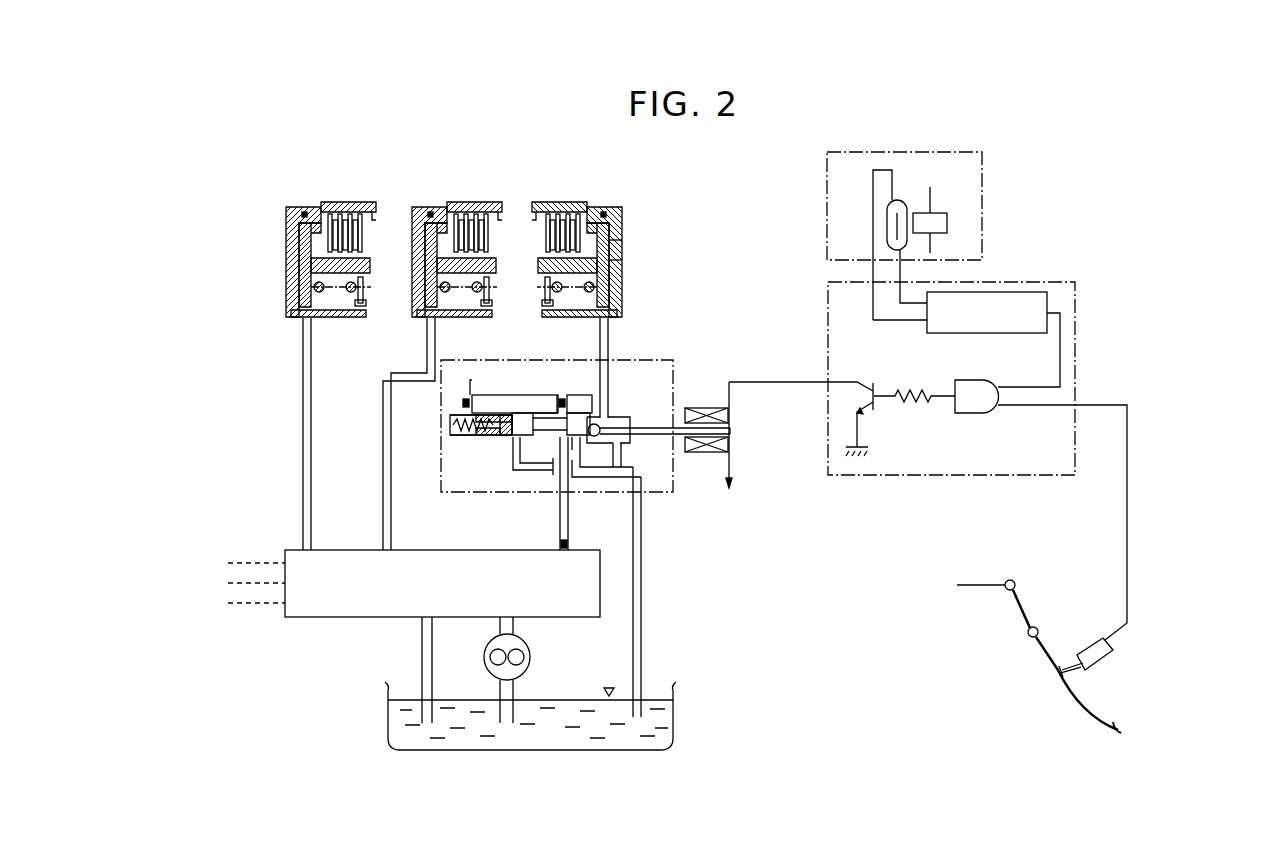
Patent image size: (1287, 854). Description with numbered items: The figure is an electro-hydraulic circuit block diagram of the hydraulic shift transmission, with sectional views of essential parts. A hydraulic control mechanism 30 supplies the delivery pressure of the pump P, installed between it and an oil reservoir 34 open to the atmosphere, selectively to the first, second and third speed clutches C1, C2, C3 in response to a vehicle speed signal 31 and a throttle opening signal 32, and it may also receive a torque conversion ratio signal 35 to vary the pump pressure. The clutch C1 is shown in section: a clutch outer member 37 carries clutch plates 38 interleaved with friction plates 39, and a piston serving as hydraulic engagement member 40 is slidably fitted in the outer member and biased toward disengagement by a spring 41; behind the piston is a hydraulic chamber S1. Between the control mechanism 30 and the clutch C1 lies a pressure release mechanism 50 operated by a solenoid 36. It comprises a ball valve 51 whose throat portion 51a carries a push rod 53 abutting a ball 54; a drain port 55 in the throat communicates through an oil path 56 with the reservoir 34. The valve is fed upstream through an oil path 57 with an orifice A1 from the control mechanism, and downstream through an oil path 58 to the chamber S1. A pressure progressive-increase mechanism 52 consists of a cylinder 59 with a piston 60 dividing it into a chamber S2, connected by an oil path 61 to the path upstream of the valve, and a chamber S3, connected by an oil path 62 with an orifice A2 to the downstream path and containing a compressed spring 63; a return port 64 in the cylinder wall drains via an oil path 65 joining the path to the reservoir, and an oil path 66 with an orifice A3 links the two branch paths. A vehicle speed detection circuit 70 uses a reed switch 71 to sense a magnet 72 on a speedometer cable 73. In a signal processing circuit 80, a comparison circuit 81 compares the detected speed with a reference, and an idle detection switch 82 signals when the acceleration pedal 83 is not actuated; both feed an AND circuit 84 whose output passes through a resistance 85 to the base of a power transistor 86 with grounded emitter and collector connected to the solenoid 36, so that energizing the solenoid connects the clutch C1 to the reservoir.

The hydraulic control mechanism 30 is at (344, 608).
The vehicle speed signal 31 is at (240, 563).
The throttle opening signal 32 is at (240, 583).
The torque conversion ratio signal 35 is at (240, 603).
The oil reservoir 34 is at (680, 712).
The solenoid 36 is at (700, 408).
The clutch outer member 37 is at (623, 216).
The clutch plates 38 is at (575, 208).
The friction plates 39 is at (545, 262).
The hydraulic engagement member 40 is at (622, 273).
The spring 41 is at (549, 298).
The pressure release mechanism 50 is at (643, 362).
The ball valve 51 is at (612, 420).
The throat portion 51a is at (641, 427).
The pressure progressive-increase mechanism 52 is at (463, 452).
The push rod 53 is at (676, 440).
The ball 54 is at (593, 437).
The drain port 55 is at (636, 444).
The oil path 56 is at (643, 557).
The oil path 57 is at (559, 500).
The oil path 58 is at (607, 347).
The cylinder 59 is at (452, 436).
The piston 60 is at (490, 436).
The oil path 61 is at (535, 438).
The oil path 62 is at (484, 394).
The spring 63 is at (451, 418).
The return port 64 is at (522, 440).
The oil path 65 is at (622, 478).
The oil path 66 is at (562, 408).
The vehicle speed detection circuit 70 is at (985, 190).
The reed switch 71 is at (898, 202).
The magnet 72 is at (959, 184).
The speedometer cable 73 is at (931, 187).
The signal processing circuit 80 is at (1076, 333).
The comparison circuit 81 is at (1004, 292).
The idle detection switch 82 is at (1098, 650).
The acceleration pedal 83 is at (1116, 712).
The AND circuit 84 is at (984, 410).
The resistance 85 is at (917, 400).
The power transistor 86 is at (878, 390).
The first speed clutch C1 is at (591, 246).
The second speed clutch C2 is at (476, 200).
The third speed clutch C3 is at (352, 200).
The hydraulic chamber S1 is at (622, 252).
The chamber S2 is at (530, 413).
The chamber S3 is at (448, 413).
The orifice A1 is at (567, 546).
The orifice A2 is at (464, 398).
The orifice A3 is at (565, 399).
The pump P is at (530, 653).